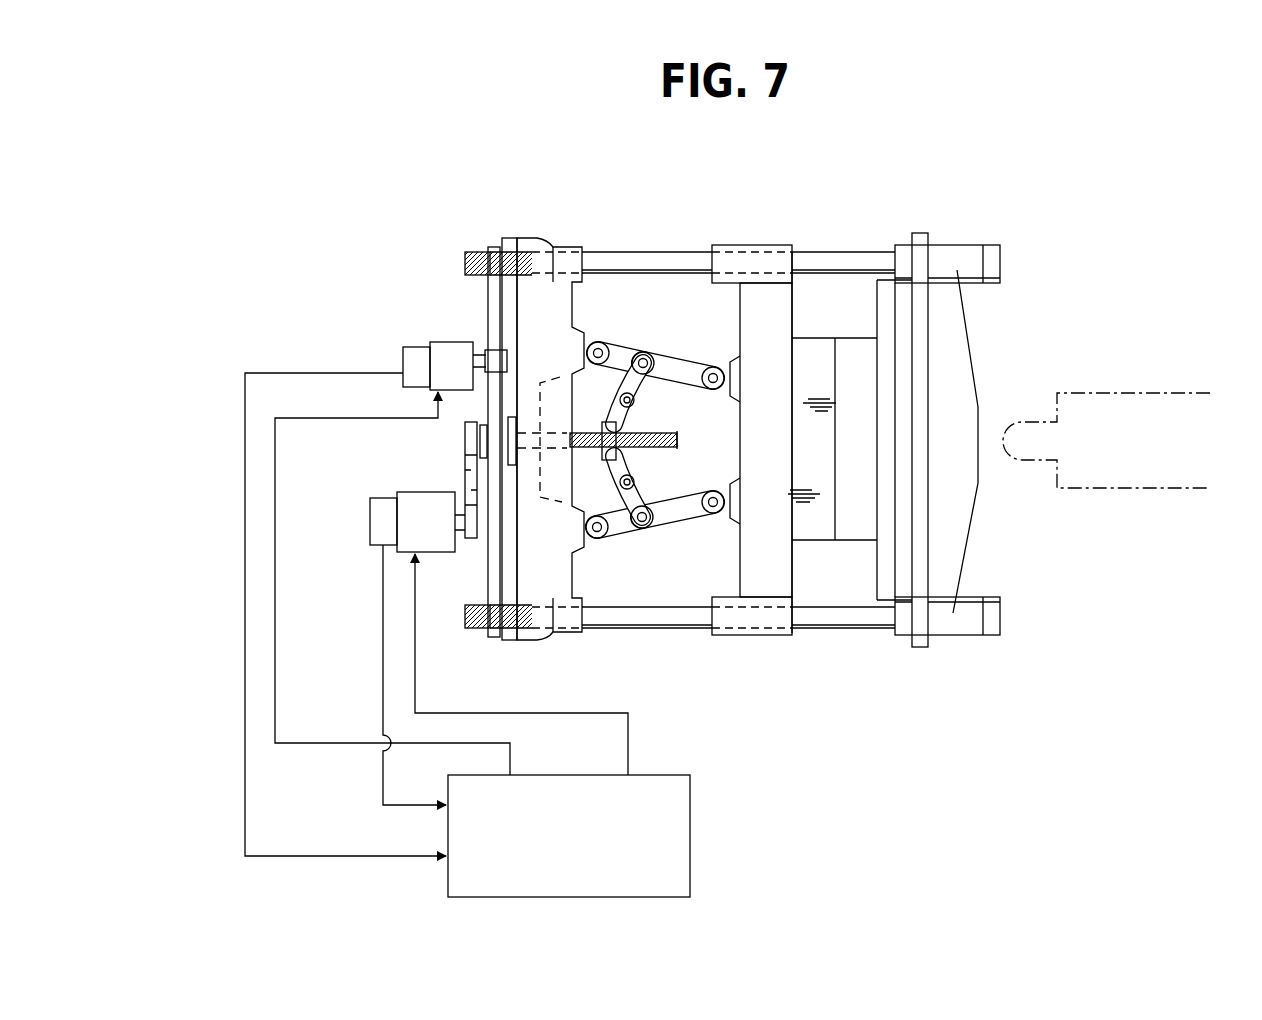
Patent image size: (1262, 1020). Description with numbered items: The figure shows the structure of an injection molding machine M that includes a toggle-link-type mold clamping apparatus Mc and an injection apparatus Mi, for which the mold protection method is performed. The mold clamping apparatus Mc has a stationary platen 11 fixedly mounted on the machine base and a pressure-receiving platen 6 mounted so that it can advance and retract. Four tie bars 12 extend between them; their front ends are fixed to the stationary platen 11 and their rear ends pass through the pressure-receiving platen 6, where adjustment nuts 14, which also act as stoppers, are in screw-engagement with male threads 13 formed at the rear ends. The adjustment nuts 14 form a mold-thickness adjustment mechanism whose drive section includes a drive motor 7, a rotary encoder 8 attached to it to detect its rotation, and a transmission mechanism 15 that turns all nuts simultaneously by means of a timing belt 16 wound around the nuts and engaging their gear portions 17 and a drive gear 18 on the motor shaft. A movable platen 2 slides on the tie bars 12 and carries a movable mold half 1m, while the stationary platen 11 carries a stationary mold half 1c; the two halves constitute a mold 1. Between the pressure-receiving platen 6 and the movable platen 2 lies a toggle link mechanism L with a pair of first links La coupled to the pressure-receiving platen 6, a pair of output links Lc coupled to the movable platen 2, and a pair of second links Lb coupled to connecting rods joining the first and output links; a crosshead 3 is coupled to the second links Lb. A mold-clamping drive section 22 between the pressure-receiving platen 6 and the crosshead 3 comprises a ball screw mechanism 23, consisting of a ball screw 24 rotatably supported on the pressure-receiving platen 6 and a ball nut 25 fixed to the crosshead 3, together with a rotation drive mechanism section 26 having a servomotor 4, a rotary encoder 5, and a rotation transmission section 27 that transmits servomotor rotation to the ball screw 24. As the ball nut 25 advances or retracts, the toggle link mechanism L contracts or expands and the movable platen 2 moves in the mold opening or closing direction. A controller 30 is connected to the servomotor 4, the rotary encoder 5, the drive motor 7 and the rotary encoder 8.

The mold 1 is at (836, 323).
The stationary mold half 1c is at (940, 332).
The movable mold half 1m is at (818, 547).
The movable platen 2 is at (747, 637).
The crosshead 3 is at (610, 418).
The servomotor 4 is at (403, 492).
The rotary encoder 5 is at (370, 522).
The pressure-receiving platen 6 is at (582, 636).
The drive motor 7 is at (432, 345).
The rotary encoder 8 is at (403, 352).
The stationary platen 11 is at (968, 545).
The tie bars 12 is at (855, 245).
The male threads 13 is at (466, 256).
The adjustment nuts 14 is at (505, 240).
The transmission mechanism 15 is at (514, 317).
The timing belt 16 is at (500, 575).
The gear portions 17 is at (490, 250).
The drive gear 18 is at (478, 350).
The mold-clamping drive section 22 is at (376, 578).
The ball screw mechanism 23 is at (617, 499).
The ball screw 24 is at (679, 438).
The ball nut 25 is at (604, 462).
The rotation drive mechanism section 26 is at (352, 493).
The rotation transmission section 27 is at (462, 480).
The controller 30 is at (690, 855).
The toggle link mechanism L is at (672, 553).
The first links La is at (628, 347).
The second links Lb is at (645, 392).
The output links Lc is at (694, 371).
The injection molding machine M is at (1098, 250).
The mold clamping apparatus Mc is at (960, 231).
The injection apparatus Mi is at (1096, 373).